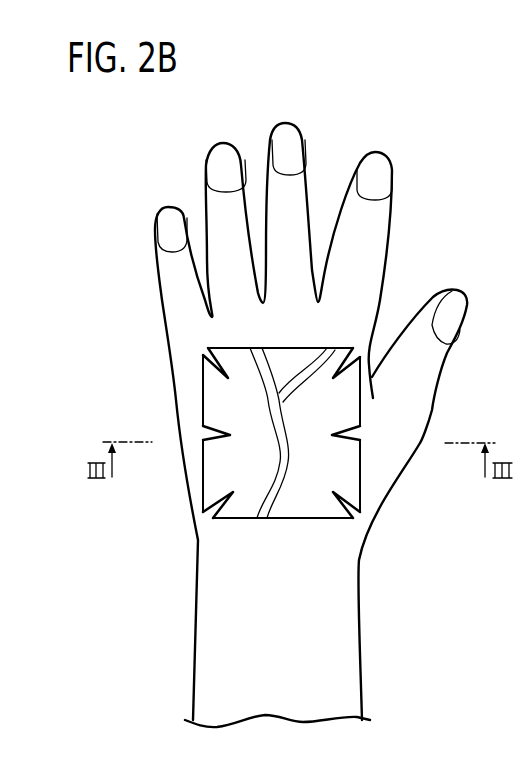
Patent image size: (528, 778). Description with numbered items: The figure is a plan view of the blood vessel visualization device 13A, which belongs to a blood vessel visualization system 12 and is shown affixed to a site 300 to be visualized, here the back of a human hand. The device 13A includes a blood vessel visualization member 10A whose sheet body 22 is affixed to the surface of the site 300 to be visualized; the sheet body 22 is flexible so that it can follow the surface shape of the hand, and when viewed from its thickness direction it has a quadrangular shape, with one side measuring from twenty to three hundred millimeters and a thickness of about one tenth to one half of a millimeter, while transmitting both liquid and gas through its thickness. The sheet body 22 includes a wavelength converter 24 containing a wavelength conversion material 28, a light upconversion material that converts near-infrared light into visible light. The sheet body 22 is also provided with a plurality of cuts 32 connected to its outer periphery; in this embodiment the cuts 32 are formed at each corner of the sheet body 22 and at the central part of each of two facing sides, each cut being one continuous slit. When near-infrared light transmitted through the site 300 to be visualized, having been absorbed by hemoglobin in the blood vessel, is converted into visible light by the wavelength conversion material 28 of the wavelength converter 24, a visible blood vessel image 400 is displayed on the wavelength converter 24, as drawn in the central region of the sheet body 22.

The blood vessel visualization device 13A is at (147, 118).
The blood vessel visualization system 12 is at (275, 411).
The blood vessel visualization member 10A is at (293, 456).
The sheet body 22 is at (203, 393).
The site to be visualized 300 is at (345, 410).
The visible blood vessel image 400 is at (268, 462).
The wavelength converter 24 is at (335, 462).
The wavelength conversion material 28 is at (407, 433).
The cuts 32 is at (355, 505).